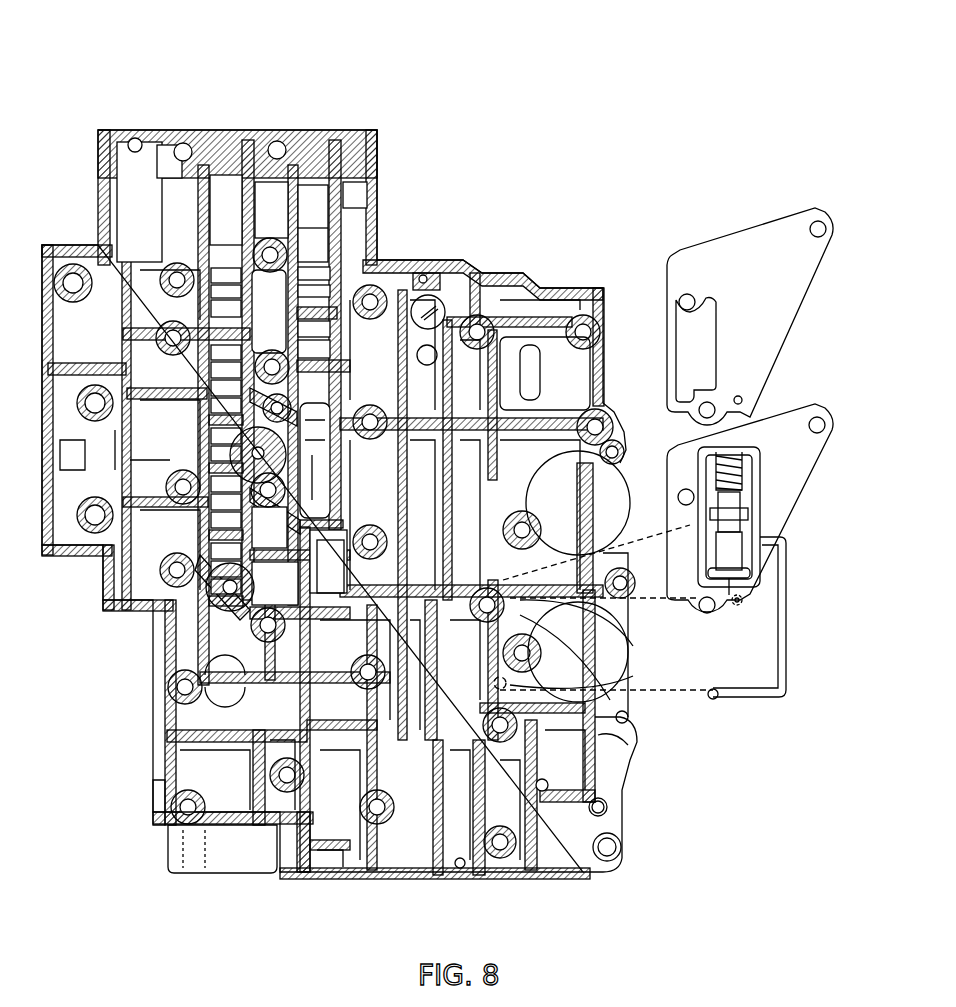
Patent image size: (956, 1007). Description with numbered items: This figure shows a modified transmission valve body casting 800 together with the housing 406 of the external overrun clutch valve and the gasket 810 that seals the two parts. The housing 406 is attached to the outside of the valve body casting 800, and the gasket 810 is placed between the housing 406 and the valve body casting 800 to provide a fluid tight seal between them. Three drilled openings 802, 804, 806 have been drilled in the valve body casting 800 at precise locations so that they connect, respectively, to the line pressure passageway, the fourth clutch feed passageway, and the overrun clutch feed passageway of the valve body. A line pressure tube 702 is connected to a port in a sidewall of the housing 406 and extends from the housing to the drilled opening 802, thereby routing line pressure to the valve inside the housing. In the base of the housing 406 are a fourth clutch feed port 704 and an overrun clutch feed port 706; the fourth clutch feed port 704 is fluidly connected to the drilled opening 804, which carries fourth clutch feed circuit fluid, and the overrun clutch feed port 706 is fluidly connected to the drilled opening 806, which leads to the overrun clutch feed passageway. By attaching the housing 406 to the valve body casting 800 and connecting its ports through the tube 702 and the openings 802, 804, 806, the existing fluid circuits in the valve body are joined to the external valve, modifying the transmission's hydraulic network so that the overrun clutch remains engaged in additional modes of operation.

The valve body casting 800 is at (330, 130).
The drilled opening 802 is at (620, 735).
The drilled opening 804 is at (604, 630).
The drilled opening 806 is at (604, 680).
The gasket 810 is at (817, 215).
The housing 406 is at (795, 470).
The overrun clutch feed port 706 is at (713, 525).
The fourth clutch feed port 704 is at (745, 603).
The line pressure tube 702 is at (785, 668).